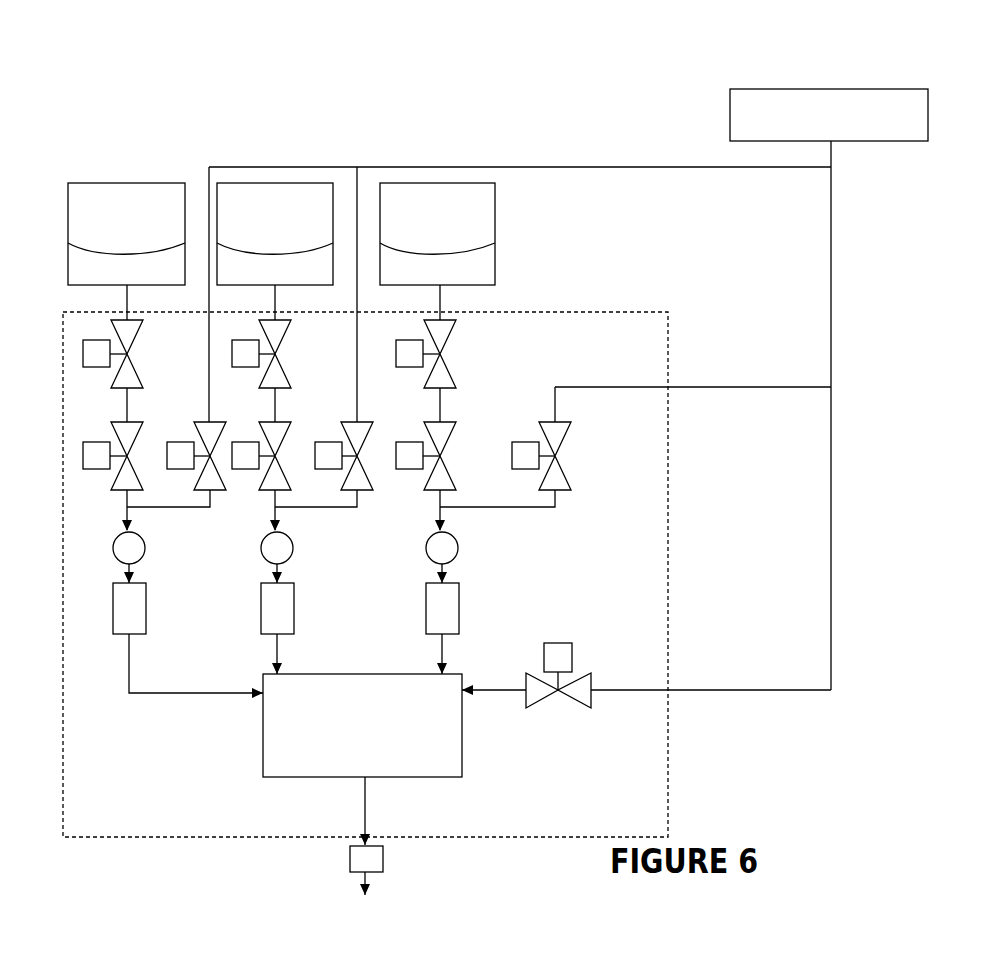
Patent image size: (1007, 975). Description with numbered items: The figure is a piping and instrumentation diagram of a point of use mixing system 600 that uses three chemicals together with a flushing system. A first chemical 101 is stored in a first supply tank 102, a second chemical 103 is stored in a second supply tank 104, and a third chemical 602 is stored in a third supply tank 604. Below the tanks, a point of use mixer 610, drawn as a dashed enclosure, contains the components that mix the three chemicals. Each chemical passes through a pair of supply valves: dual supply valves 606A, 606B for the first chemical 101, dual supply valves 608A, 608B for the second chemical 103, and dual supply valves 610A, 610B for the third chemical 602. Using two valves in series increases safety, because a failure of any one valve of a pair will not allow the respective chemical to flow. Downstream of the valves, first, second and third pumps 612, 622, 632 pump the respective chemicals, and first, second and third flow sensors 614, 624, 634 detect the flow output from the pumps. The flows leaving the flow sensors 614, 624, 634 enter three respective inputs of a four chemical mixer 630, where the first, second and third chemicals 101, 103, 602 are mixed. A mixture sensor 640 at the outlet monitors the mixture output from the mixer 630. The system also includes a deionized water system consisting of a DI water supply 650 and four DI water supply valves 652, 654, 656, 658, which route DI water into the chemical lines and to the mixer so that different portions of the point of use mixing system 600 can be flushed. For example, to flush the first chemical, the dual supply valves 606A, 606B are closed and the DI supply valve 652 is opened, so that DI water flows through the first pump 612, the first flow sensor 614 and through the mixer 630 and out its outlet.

The point of use mixing system 600 is at (430, 127).
The first chemical 101 is at (77, 272).
The first supply tank 102 is at (150, 183).
The second chemical 103 is at (300, 270).
The second supply tank 104 is at (272, 183).
The third chemical 602 is at (483, 262).
The third supply tank 604 is at (495, 200).
The point of use mixer 610 is at (668, 340).
The dual supply valve 606A is at (83, 354).
The dual supply valve 606B is at (83, 462).
The dual supply valve 608A is at (263, 372).
The dual supply valve 608B is at (288, 432).
The dual supply valve 610A is at (452, 365).
The dual supply valve 610B is at (452, 435).
The DI water supply valve 652 is at (197, 430).
The DI water supply valve 654 is at (373, 480).
The DI water supply valve 656 is at (570, 480).
The DI water supply valve 658 is at (560, 643).
The first pump 612 is at (146, 545).
The first flow sensor 614 is at (146, 603).
The second pump 622 is at (294, 545).
The second flow sensor 624 is at (294, 603).
The third pump 632 is at (459, 545).
The third flow sensor 634 is at (459, 603).
The four chemical mixer 630 is at (462, 737).
The mixture sensor 640 is at (383, 855).
The DI water supply 650 is at (928, 108).